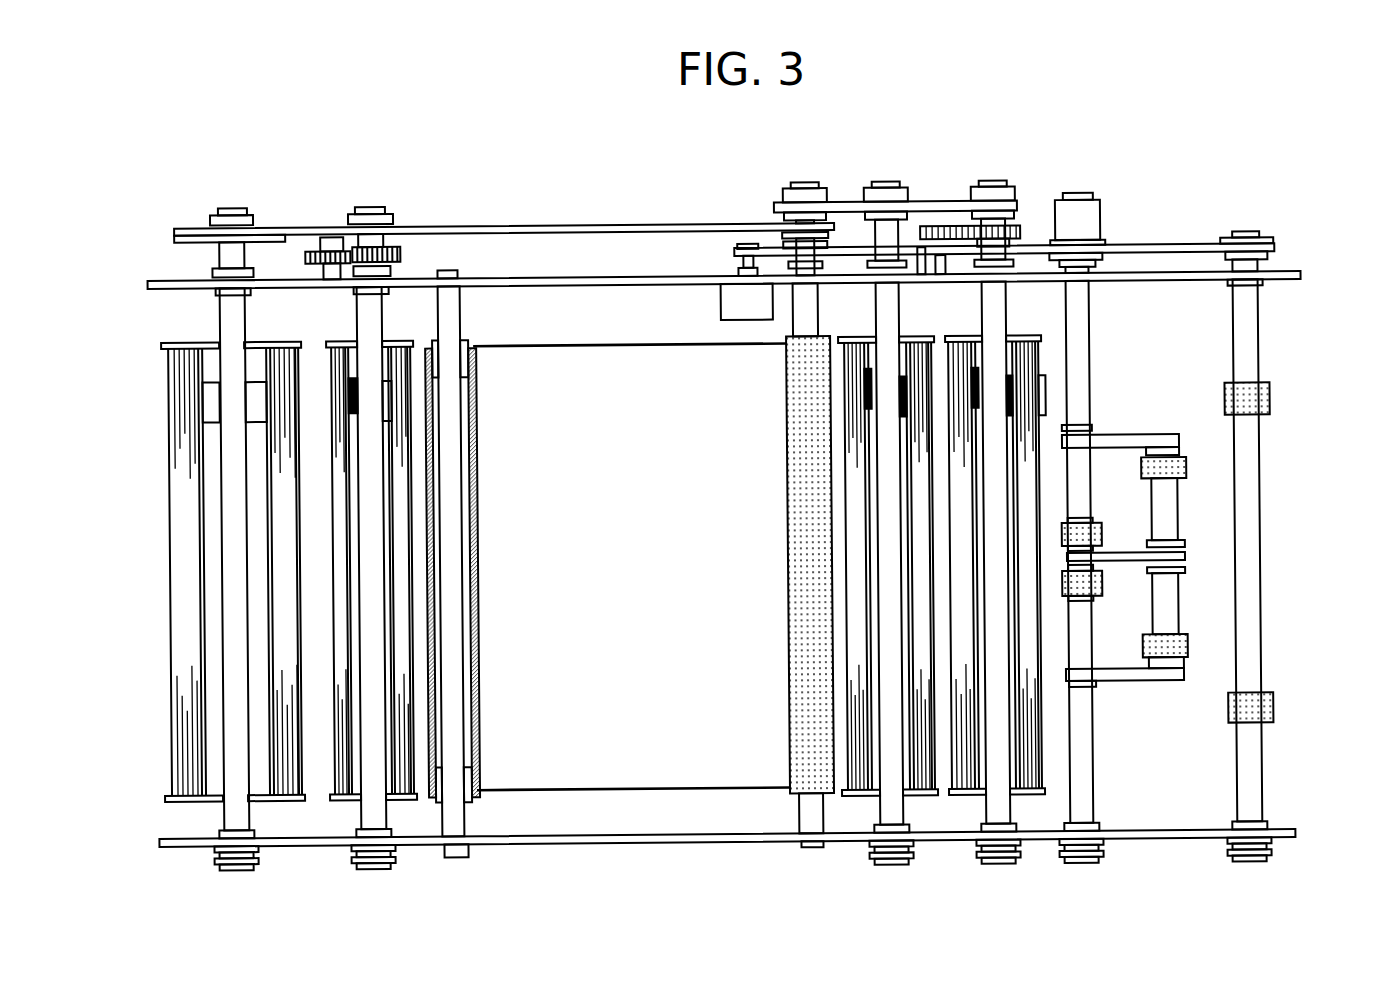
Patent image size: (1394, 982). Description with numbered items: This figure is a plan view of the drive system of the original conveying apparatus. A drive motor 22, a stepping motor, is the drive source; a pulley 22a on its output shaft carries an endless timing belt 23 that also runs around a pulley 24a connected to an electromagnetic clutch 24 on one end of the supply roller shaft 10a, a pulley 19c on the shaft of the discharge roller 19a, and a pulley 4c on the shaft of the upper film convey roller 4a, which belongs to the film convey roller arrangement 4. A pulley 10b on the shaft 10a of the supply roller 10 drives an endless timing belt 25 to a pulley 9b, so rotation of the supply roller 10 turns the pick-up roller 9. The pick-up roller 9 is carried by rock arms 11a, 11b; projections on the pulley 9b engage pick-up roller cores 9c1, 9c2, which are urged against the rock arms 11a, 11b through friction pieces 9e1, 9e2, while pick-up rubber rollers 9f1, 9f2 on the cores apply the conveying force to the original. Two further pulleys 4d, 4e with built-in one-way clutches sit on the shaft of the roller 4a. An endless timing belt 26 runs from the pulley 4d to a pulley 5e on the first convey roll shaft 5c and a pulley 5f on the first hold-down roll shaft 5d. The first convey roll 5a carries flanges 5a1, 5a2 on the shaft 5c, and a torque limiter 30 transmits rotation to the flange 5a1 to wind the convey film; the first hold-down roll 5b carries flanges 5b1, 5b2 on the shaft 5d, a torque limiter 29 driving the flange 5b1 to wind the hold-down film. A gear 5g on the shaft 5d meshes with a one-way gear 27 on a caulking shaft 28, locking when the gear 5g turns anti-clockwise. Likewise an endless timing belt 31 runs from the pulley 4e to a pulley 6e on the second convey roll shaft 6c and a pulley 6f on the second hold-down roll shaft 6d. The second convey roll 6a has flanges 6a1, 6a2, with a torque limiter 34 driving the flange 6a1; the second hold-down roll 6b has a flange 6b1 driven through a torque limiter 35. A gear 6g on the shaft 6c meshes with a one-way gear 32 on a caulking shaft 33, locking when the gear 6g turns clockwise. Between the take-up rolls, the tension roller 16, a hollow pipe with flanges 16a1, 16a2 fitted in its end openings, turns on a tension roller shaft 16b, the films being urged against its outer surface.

The tape cassette 4 is at (760, 813).
The upper film convey roller 4a is at (775, 486).
The pulley 4c is at (786, 242).
The pulley 4d is at (790, 230).
The pulley 4e is at (830, 190).
The first convey roll 5a is at (204, 580).
The flange 5a1 is at (185, 340).
The flange 5a2 is at (217, 793).
The first hold-down roll 5b is at (364, 600).
The flange 5b1 is at (345, 340).
The flange 5b2 is at (395, 797).
The first convey roll shaft 5c is at (232, 490).
The first hold-down roll shaft 5d is at (370, 610).
The pulley 5e is at (224, 224).
The pulley 5f is at (419, 224).
The gear 5g is at (422, 251).
The second convey roll 6a is at (1051, 572).
The flange 6a1 is at (1010, 344).
The flange 6a2 is at (1030, 797).
The second hold-down roll 6b is at (824, 574).
The flange 6b1 is at (870, 370).
The second convey roll shaft 6c is at (1000, 735).
The second hold-down roll shaft 6d is at (888, 601).
The pulley 6e is at (1013, 196).
The pulley 6f is at (884, 190).
The gear 6g is at (1012, 225).
The pick-up roller 9 is at (1190, 524).
The pulley 9b is at (1170, 572).
The pick-up roller core 9c1 is at (1165, 510).
The pick-up roller core 9c2 is at (1165, 610).
The friction piece 9e1 is at (1180, 455).
The friction piece 9e2 is at (1183, 667).
The pick-up rubber roller 9f1 is at (1190, 472).
The pick-up rubber roller 9f2 is at (1190, 647).
The supply roller 10 is at (1085, 530).
The supply roller shaft 10a is at (1091, 320).
The pulley 10b is at (1085, 595).
The rock arm 11a is at (1162, 438).
The rock arm 11b is at (1162, 684).
The tension roller 16 is at (501, 563).
The roller flange 16a1 is at (470, 340).
The roller flange 16a2 is at (478, 800).
The tension roller shaft 16b is at (470, 469).
The discharge roller 19a is at (1303, 539).
The pulley 19c is at (1277, 245).
The drive motor 22 is at (723, 300).
The pulley 22a is at (740, 250).
The endless timing belt 23 is at (926, 276).
The electromagnetic clutch 24 is at (1116, 200).
The pulley 24a is at (1108, 244).
The endless timing belt 25 is at (1125, 556).
The endless timing belt 26 is at (513, 224).
The one-way gear 27 is at (302, 214).
The caulking shaft 28 is at (314, 262).
The torque limiter 29 is at (355, 400).
The torque limiter 30 is at (204, 396).
The endless timing belt 31 is at (922, 203).
The one-way gear 32 is at (945, 227).
The caulking shaft 33 is at (944, 276).
The torque limiter 34 is at (1048, 400).
The torque limiter 35 is at (788, 400).